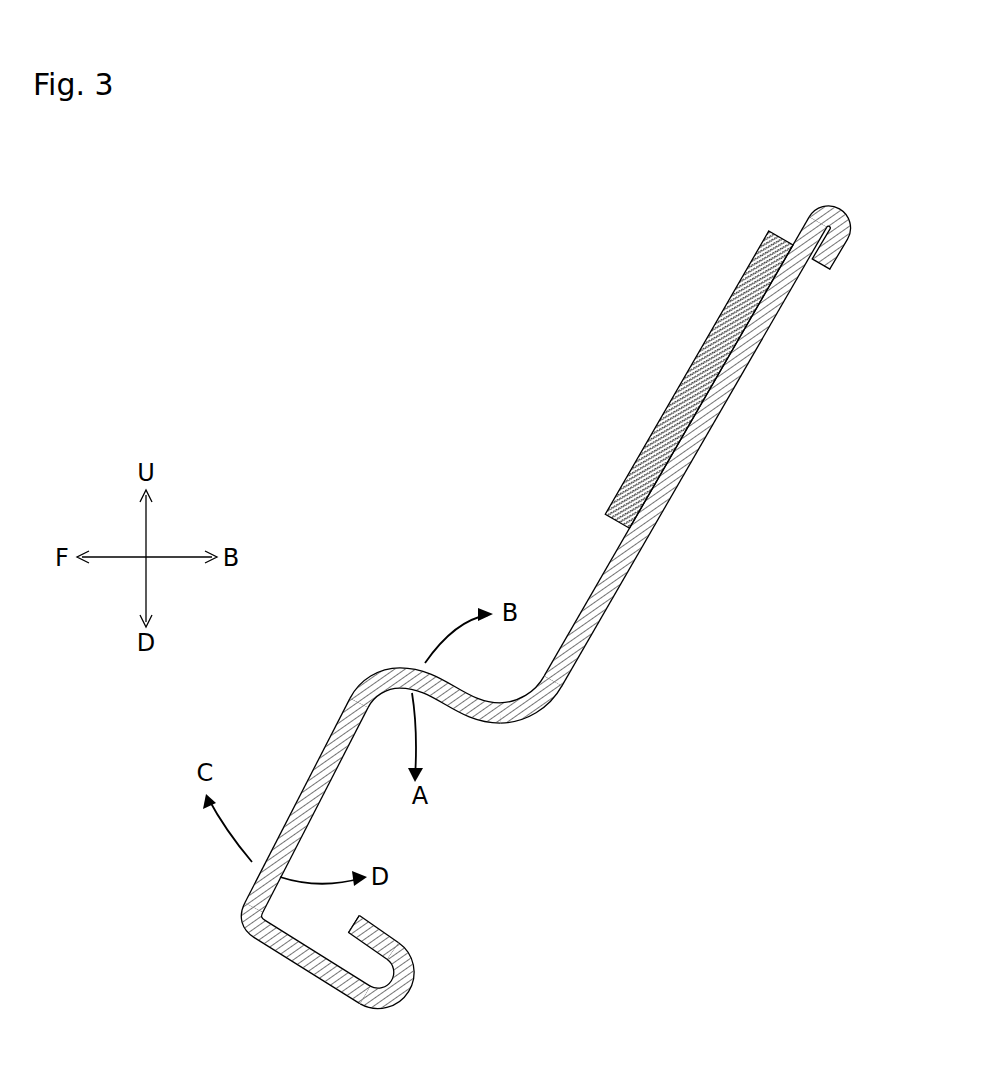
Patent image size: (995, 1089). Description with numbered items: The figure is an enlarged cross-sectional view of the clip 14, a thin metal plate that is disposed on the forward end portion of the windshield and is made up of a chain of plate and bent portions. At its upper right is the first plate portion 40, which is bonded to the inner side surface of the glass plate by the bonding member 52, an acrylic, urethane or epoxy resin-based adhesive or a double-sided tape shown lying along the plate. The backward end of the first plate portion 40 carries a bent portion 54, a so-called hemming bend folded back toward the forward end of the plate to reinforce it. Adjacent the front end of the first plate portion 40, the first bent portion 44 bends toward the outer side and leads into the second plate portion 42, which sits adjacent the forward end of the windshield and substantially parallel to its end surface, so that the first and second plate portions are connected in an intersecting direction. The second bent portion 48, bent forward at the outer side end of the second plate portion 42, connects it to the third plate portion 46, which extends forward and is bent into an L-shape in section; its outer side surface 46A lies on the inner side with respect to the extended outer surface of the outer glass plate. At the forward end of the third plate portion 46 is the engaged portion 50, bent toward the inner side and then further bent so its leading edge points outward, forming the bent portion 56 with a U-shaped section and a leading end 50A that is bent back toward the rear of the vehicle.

The clip 14 is at (808, 360).
The first plate portion 40 is at (709, 428).
The second plate portion 42 is at (448, 702).
The first bent portion 44 is at (520, 722).
The third plate portion 46 is at (308, 812).
The outer side surface 46A is at (302, 788).
The second bent portion 48 is at (393, 668).
The engaged portion 50 is at (408, 934).
The leading end 50A is at (350, 920).
The bonding member 52 is at (686, 380).
The bent portion 54 is at (830, 204).
The bent portion 56 is at (410, 997).